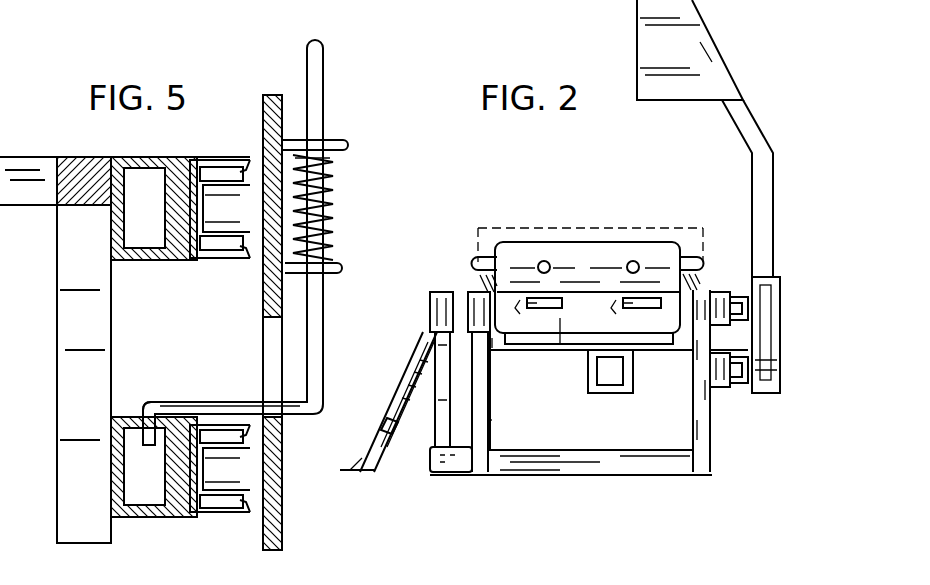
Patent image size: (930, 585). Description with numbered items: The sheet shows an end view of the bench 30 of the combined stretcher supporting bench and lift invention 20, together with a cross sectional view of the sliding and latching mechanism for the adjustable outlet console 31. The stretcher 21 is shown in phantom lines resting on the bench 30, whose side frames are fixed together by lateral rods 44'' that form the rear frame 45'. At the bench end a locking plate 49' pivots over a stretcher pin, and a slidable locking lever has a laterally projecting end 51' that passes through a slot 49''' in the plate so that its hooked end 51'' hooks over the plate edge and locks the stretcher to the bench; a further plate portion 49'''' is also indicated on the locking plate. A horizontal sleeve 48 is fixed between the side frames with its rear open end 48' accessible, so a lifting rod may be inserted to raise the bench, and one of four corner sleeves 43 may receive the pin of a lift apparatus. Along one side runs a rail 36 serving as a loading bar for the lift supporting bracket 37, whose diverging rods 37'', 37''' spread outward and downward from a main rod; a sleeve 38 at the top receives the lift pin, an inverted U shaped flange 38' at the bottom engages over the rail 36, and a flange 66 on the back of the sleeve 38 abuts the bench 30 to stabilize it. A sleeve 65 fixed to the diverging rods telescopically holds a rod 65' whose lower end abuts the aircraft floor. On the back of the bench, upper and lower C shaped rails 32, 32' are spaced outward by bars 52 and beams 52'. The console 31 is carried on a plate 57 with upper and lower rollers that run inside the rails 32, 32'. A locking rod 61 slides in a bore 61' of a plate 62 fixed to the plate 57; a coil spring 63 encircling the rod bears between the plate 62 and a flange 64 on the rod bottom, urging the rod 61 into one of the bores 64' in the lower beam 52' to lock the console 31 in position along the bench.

In FIG. 2, the combined stretcher supporting bench and stretcher lift and conveying invention 20 is at (622, 216).
In FIG. 2, the stretcher 21 is at (531, 220).
In FIG. 2, the bench 30 is at (696, 484).
In FIG. 2, the outlet console 31 is at (760, 78).
In FIG. 5, the rail 32 is at (210, 194).
In FIG. 2, the rail 32 is at (729, 285).
In FIG. 5, the rail 32' is at (220, 504).
In FIG. 2, the rail 32' is at (738, 387).
In FIG. 2, the rail 36 is at (437, 479).
In FIG. 2, the lift supporting bracket 37 is at (388, 402).
In FIG. 2, the diverging rod 37'' is at (515, 366).
In FIG. 2, the diverging rod 37''' is at (516, 420).
In FIG. 2, the sleeve 38 is at (421, 369).
In FIG. 2, the inverted U shaped flange 38' is at (428, 474).
In FIG. 2, the sleeve 43 is at (478, 292).
In FIG. 2, the lateral rod 44'' is at (585, 493).
In FIG. 2, the rear frame 45' is at (595, 397).
In FIG. 2, the horizontal sleeve 48 is at (606, 395).
In FIG. 2, the rear open end 48' is at (628, 399).
In FIG. 2, the locking plate 49' is at (543, 249).
In FIG. 2, the slot 49''' is at (701, 248).
In FIG. 2, the rod portion 49'''' is at (573, 353).
In FIG. 2, the laterally projecting end 51' is at (534, 321).
In FIG. 2, the laterally hooked end 51'' is at (636, 321).
In FIG. 5, the bar 52 is at (154, 229).
In FIG. 2, the bar 52 is at (787, 332).
In FIG. 5, the beam 52' is at (154, 490).
In FIG. 2, the beam 52' is at (735, 425).
In FIG. 5, the plate 57 is at (266, 312).
In FIG. 2, the plate 57 is at (776, 277).
In FIG. 5, the locking rod 61 is at (252, 242).
In FIG. 5, the bore 61' is at (340, 172).
In FIG. 5, the plate 62 is at (348, 145).
In FIG. 5, the coil spring 63 is at (336, 203).
In FIG. 5, the flange 64 is at (332, 260).
In FIG. 5, the bore 64' is at (216, 395).
In FIG. 2, the sleeve 65 is at (393, 394).
In FIG. 2, the rod 65' is at (355, 481).
In FIG. 2, the flange 66 is at (385, 424).